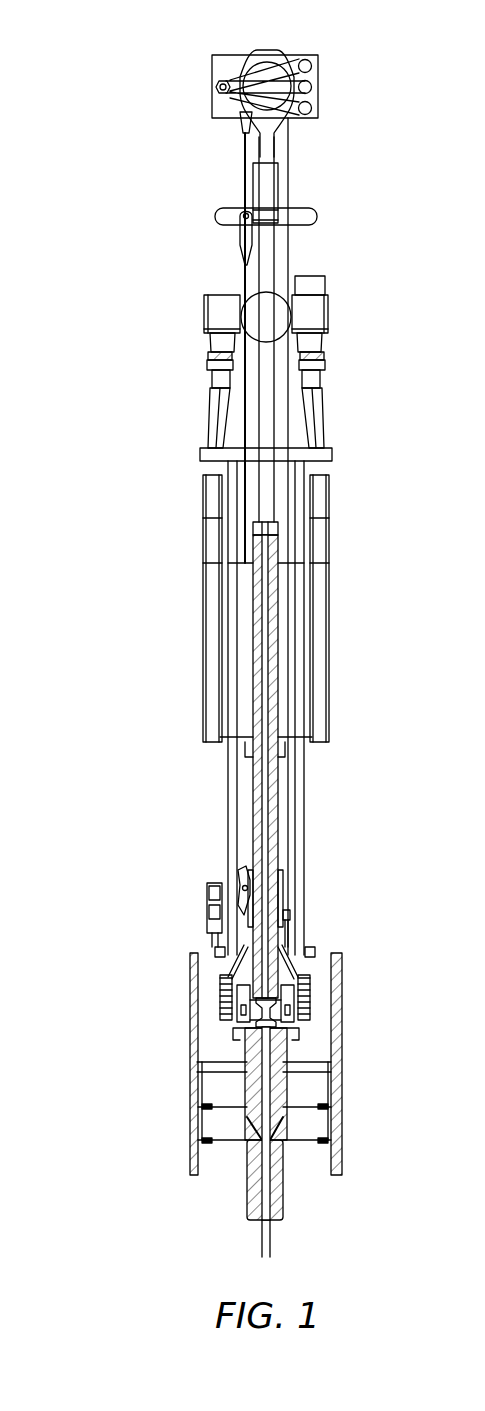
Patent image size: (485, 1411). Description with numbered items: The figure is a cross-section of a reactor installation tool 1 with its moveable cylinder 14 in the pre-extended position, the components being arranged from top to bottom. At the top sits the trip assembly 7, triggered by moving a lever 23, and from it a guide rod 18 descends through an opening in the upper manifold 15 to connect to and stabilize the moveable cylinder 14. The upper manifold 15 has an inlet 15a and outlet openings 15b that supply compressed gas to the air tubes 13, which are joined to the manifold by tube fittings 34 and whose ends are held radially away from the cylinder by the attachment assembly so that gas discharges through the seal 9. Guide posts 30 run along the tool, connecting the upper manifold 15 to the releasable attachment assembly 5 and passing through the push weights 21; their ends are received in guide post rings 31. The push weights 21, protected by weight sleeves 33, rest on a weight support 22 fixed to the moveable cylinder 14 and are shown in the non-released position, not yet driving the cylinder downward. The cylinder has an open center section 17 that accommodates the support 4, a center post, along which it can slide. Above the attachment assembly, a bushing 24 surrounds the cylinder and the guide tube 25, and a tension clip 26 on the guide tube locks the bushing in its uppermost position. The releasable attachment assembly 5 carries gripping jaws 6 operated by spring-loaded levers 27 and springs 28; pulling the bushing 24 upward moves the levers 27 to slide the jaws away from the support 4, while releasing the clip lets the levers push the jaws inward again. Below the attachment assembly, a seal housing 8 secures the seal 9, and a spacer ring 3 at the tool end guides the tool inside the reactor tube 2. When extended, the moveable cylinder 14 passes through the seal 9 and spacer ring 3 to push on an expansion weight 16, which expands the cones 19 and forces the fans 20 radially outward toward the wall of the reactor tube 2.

The reactor installation tool 1 is at (150, 250).
The reactor tube 2 is at (190, 1030).
The spacer ring 3 is at (325, 1063).
The support 4 is at (272, 1247).
The releasable attachment assembly 5 is at (222, 1002).
The gripping jaws 6 is at (287, 1027).
The trip assembly 7 is at (320, 88).
The seal housing 8 is at (240, 1033).
The seal 9 is at (240, 1053).
The air tubes 13 is at (318, 423).
The moveable cylinder 14 is at (255, 805).
The upper manifold 15 is at (208, 313).
The inlet 15a is at (318, 290).
The outlet openings 15b is at (208, 346).
The expansion weight 16 is at (277, 1110).
The open center section 17 is at (262, 777).
The guide rod 18 is at (266, 262).
The cones 19 is at (247, 1117).
The fans 20 is at (322, 1087).
The push weights 21 is at (293, 584).
The weight support 22 is at (293, 737).
The lever 23 is at (300, 62).
The bushing 24 is at (285, 930).
The guide tube 25 is at (282, 877).
The tension clip 26 is at (243, 888).
The spring-loaded levers 27 is at (297, 960).
The springs 28 is at (312, 997).
The guide posts 30 is at (305, 517).
The guide post rings 31 is at (294, 457).
The weight sleeves 33 is at (213, 655).
The tube fittings 34 is at (215, 380).